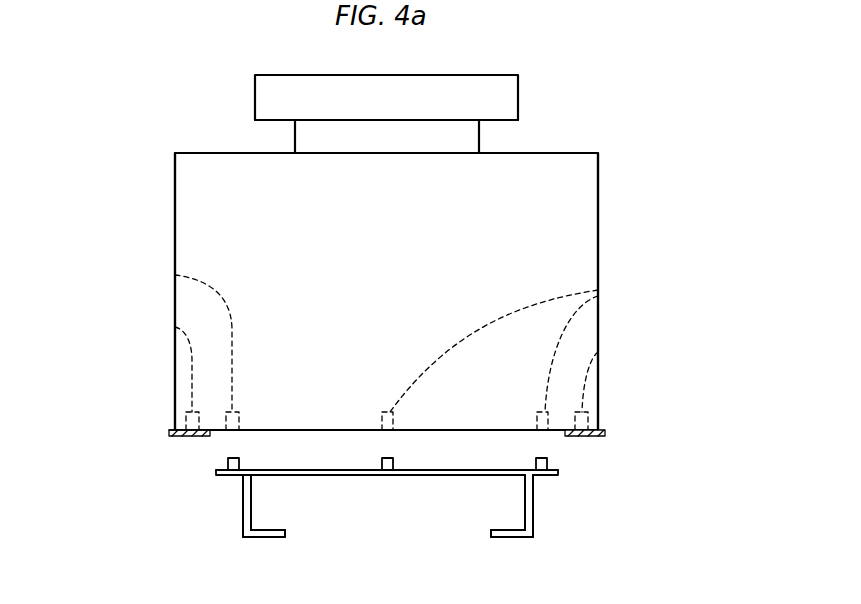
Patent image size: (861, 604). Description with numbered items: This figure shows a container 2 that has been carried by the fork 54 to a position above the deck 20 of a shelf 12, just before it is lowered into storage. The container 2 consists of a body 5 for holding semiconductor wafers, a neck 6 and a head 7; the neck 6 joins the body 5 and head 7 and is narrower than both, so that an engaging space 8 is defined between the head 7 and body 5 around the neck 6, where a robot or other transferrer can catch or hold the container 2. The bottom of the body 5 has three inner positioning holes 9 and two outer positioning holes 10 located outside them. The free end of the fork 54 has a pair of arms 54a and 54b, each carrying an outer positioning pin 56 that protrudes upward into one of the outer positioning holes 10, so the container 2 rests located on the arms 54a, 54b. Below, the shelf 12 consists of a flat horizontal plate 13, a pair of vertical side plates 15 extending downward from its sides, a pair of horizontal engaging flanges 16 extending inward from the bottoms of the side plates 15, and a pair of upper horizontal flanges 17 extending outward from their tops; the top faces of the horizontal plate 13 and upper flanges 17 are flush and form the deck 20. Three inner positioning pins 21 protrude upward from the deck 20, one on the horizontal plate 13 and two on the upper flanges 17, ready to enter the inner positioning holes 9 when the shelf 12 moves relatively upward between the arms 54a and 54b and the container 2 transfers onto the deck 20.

The container 2 is at (600, 182).
The body 5 is at (565, 223).
The neck 6 is at (344, 143).
The head 7 is at (436, 100).
The engaging space 8 is at (282, 136).
The inner positioning holes 9 is at (175, 275).
The outer positioning holes 10 is at (175, 327).
The outer positioning pin 56 is at (598, 352).
The fork 54 is at (168, 430).
The fork arm 54a is at (605, 430).
The fork arm 54b is at (193, 436).
The deck 20 is at (405, 468).
The horizontal plate 13 is at (388, 477).
The inner positioning pins 21 is at (228, 462).
The shelf 12 is at (535, 538).
The upper horizontal flanges 17 is at (229, 478).
The side plates 15 is at (245, 522).
The engaging flanges 16 is at (268, 537).